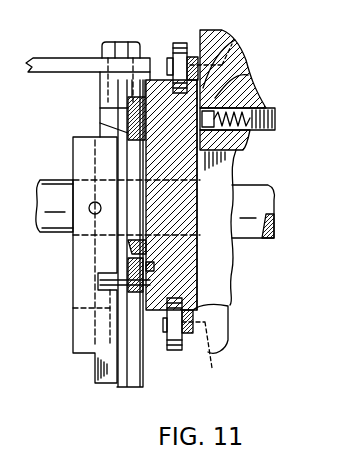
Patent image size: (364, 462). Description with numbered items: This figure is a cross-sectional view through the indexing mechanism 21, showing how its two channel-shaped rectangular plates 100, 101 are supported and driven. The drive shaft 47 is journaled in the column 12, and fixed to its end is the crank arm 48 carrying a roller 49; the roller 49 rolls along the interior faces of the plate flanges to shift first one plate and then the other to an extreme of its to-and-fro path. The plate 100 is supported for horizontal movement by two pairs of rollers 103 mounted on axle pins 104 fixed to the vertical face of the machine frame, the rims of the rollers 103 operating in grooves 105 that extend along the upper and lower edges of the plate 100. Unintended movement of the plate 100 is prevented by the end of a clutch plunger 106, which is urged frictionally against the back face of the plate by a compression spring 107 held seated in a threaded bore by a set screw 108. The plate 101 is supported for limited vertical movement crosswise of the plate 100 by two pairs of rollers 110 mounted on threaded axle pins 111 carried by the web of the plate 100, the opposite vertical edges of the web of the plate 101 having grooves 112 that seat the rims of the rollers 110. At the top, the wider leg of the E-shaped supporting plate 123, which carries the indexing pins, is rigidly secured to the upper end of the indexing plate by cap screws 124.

The column 12 is at (228, 34).
The indexing mechanism 21 is at (62, 351).
The shaft 47 is at (54, 188).
The crank arm 48 is at (78, 266).
The roller 49 is at (100, 292).
The plate 100 is at (232, 280).
The plate 101 is at (114, 392).
The rollers 103 is at (178, 43).
The axle pins 104 is at (234, 42).
The grooves 105 is at (244, 61).
The clutch plunger 106 is at (254, 84).
The compression spring 107 is at (233, 174).
The set screw 108 is at (274, 126).
The rollers 110 is at (128, 109).
The threaded axle pins 111 is at (150, 267).
The grooves 112 is at (128, 129).
The E-shaped supporting plate 123 is at (58, 62).
The cap screws 124 is at (137, 22).